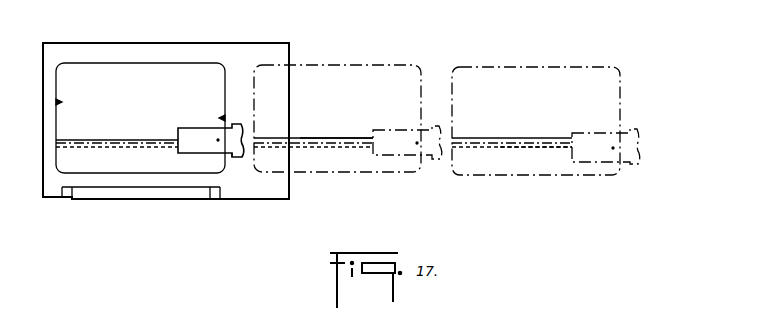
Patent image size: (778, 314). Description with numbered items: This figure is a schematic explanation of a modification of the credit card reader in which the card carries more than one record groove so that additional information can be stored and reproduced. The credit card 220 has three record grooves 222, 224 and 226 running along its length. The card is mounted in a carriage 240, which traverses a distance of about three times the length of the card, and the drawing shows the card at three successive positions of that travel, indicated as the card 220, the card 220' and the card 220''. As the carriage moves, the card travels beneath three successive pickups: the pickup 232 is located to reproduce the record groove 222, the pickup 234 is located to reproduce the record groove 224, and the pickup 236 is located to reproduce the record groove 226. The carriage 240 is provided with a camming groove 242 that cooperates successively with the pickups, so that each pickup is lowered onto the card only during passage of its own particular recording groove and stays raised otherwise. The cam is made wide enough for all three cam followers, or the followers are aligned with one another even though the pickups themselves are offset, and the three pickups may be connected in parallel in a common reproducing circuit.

The carriage 240 is at (162, 47).
The credit card 220 is at (140, 146).
The credit card 220' is at (352, 97).
The credit card 220'' is at (547, 102).
The record groove 222 is at (163, 138).
The record groove 224 is at (123, 142).
The record groove 226 is at (83, 143).
The pickup 232 is at (228, 158).
The pickup 234 is at (420, 156).
The pickup 236 is at (618, 153).
The camming groove 242 is at (164, 196).